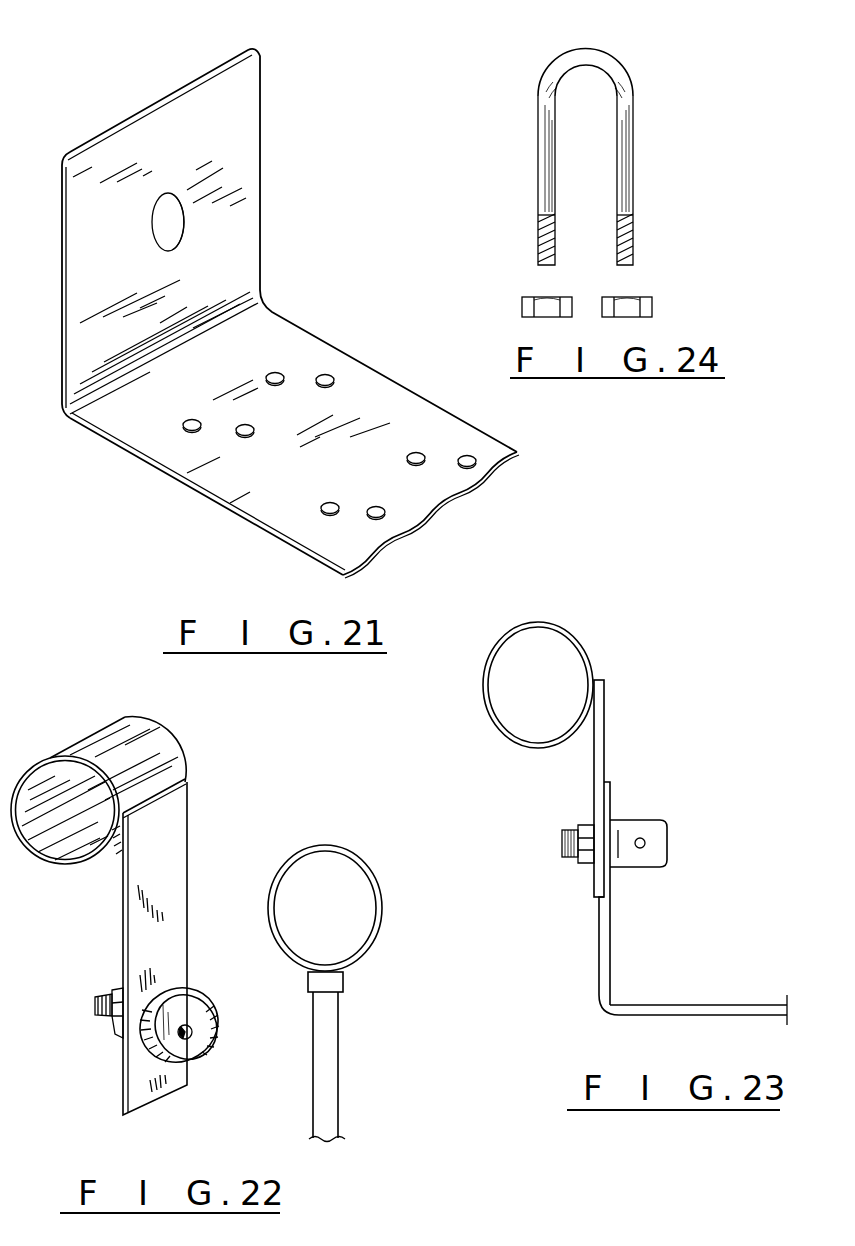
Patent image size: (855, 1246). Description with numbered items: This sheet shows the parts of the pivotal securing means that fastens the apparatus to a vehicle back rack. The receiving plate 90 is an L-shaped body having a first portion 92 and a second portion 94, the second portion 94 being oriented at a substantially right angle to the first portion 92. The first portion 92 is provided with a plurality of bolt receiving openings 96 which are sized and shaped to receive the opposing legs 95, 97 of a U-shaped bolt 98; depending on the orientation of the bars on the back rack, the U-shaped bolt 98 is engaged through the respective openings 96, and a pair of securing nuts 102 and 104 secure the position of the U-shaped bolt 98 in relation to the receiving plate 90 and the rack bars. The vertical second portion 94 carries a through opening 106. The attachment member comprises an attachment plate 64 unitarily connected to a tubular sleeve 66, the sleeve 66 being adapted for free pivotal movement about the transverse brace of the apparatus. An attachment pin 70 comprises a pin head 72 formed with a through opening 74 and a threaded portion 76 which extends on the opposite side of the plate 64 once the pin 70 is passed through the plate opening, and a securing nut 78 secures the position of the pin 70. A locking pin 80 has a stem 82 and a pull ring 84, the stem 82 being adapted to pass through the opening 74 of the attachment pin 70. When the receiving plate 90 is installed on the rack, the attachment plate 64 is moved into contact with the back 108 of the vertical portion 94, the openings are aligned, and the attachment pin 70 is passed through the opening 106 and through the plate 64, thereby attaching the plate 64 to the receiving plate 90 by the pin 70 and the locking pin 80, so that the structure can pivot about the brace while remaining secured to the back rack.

In FIG. 21, the receiving plate 90 is at (366, 365).
In FIG. 21, the first portion 92 is at (301, 474).
In FIG. 23, the first portion 92 is at (695, 1005).
In FIG. 21, the second portion 94 is at (224, 274).
In FIG. 23, the second portion 94 is at (612, 975).
In FIG. 21, the bolt receiving openings 96 is at (282, 373).
In FIG. 21, the through opening 106 is at (170, 207).
In FIG. 24, the U-shaped bolt 98 is at (600, 58).
In FIG. 24, the leg 95 is at (538, 180).
In FIG. 24, the leg 97 is at (633, 176).
In FIG. 24, the securing nut 102 is at (522, 305).
In FIG. 24, the securing nut 104 is at (652, 305).
In FIG. 22, the tubular sleeve 66 is at (150, 745).
In FIG. 23, the tubular sleeve 66 is at (578, 638).
In FIG. 22, the attachment plate 64 is at (175, 842).
In FIG. 23, the attachment plate 64 is at (606, 708).
In FIG. 22, the attachment pin 70 is at (200, 992).
In FIG. 23, the attachment pin 70 is at (650, 867).
In FIG. 22, the pin head 72 is at (218, 1021).
In FIG. 22, the through opening 74 is at (189, 1040).
In FIG. 22, the threaded portion 76 is at (95, 1000).
In FIG. 22, the securing nut 78 is at (118, 1038).
In FIG. 22, the pull ring 84 is at (355, 858).
In FIG. 22, the locking pin 80 is at (340, 1020).
In FIG. 22, the stem 82 is at (330, 1073).
In FIG. 23, the back 108 is at (599, 940).